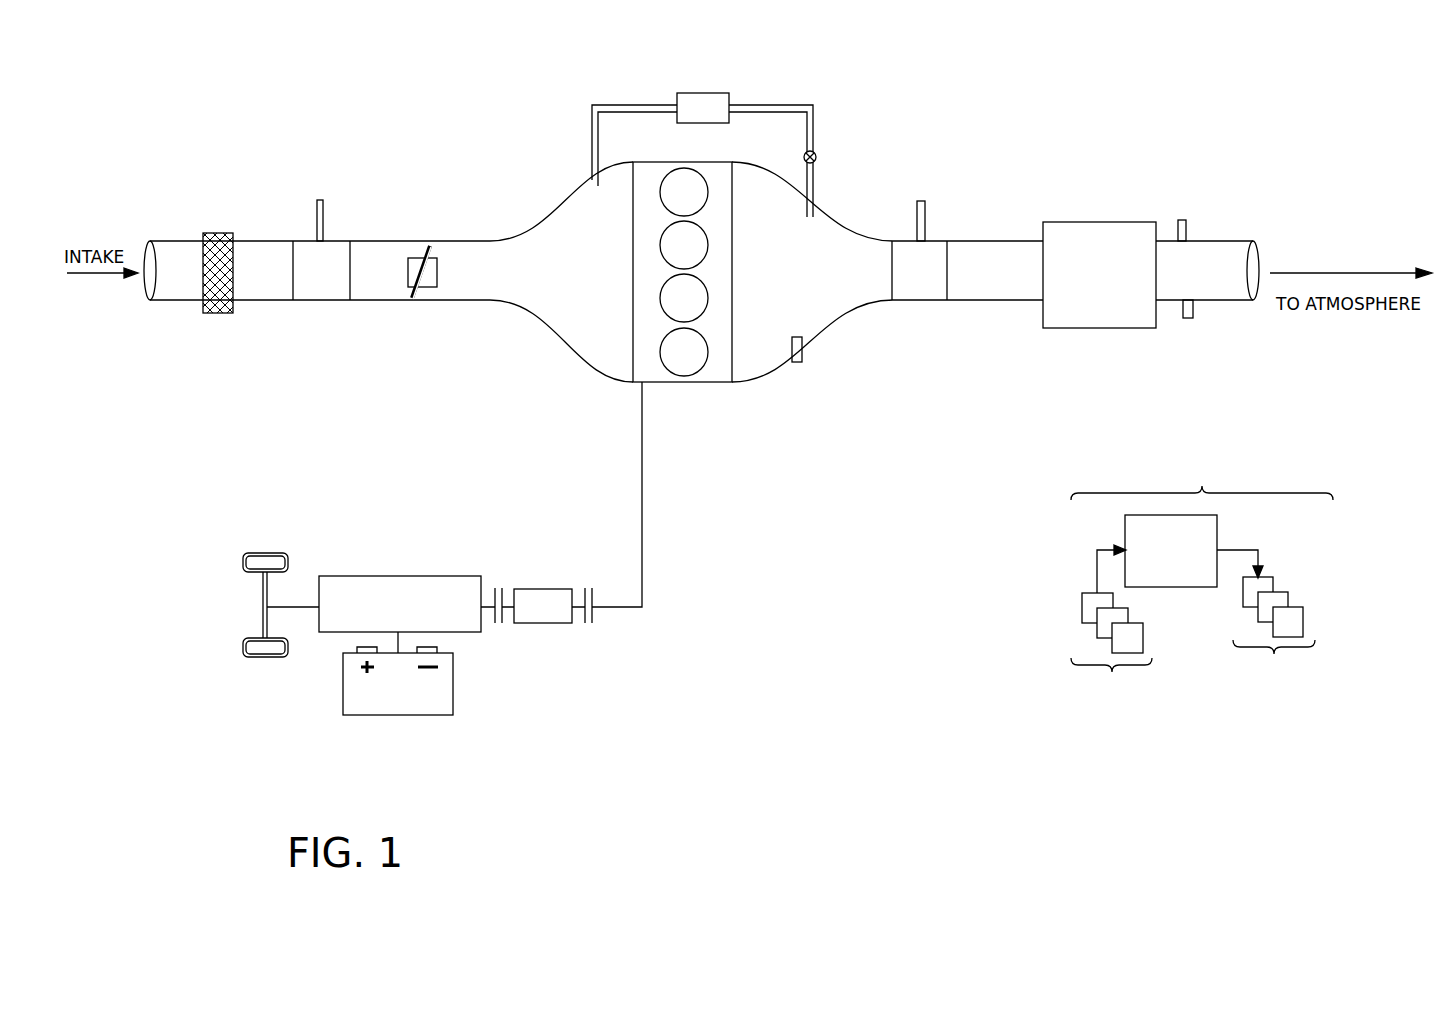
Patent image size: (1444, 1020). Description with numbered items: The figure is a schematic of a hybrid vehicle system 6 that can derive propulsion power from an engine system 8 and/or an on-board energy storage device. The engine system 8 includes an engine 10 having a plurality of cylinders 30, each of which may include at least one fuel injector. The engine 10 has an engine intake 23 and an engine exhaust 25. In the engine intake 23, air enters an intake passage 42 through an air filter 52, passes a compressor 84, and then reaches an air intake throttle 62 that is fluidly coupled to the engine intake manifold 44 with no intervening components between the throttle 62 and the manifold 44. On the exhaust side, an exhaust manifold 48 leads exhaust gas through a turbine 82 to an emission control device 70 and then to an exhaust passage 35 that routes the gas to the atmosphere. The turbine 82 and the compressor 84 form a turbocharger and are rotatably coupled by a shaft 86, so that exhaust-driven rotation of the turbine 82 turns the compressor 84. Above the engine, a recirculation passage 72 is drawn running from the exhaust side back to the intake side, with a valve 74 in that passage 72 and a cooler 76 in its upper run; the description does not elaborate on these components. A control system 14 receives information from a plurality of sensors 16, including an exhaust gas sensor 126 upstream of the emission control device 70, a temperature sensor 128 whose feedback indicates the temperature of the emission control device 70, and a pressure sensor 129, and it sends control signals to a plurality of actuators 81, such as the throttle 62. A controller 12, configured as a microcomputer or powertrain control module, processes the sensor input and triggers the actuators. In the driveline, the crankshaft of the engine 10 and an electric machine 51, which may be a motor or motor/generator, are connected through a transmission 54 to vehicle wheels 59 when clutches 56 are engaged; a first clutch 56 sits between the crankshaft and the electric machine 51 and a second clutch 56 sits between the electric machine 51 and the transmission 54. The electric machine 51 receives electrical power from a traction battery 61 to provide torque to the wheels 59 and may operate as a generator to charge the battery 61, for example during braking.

The hybrid vehicle system 6 is at (166, 138).
The engine system 8 is at (1288, 140).
The engine 10 is at (733, 252).
The controller 12 is at (1171, 551).
The control system 14 is at (1202, 579).
The sensors 16 is at (1111, 630).
The engine intake 23 is at (555, 185).
The engine exhaust 25 is at (850, 186).
The cylinders 30 is at (708, 186).
The exhaust passage 35 is at (1236, 241).
The intake passage 42 is at (188, 302).
The engine intake manifold 44 is at (561, 272).
The exhaust manifold 48 is at (812, 272).
The electric machine 51 is at (540, 625).
The air filter 52 is at (218, 232).
The transmission 54 is at (345, 633).
The clutches 56 is at (503, 590).
The vehicle wheels 59 is at (244, 660).
The traction battery 61 is at (405, 717).
The air intake throttle 62 is at (437, 277).
The emission control device 70 is at (1084, 223).
The EGR passage 72 is at (813, 105).
The EGR valve 74 is at (816, 153).
The EGR cooler 76 is at (703, 108).
The actuators 81 is at (1266, 624).
The turbine 82 is at (967, 270).
The compressor 84 is at (321, 270).
The shaft 86 is at (316, 204).
The exhaust gas sensor 126 is at (802, 340).
The temperature sensor 128 is at (1188, 318).
The pressure sensor 129 is at (1182, 219).